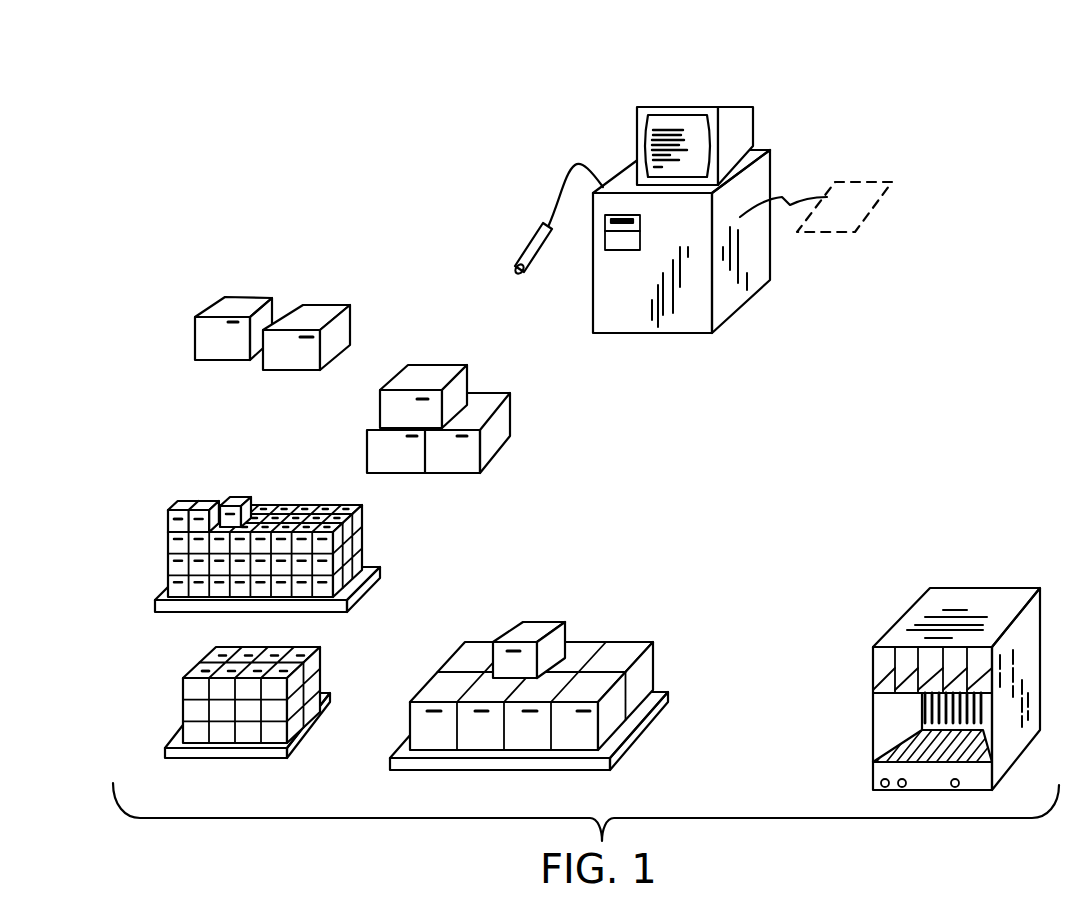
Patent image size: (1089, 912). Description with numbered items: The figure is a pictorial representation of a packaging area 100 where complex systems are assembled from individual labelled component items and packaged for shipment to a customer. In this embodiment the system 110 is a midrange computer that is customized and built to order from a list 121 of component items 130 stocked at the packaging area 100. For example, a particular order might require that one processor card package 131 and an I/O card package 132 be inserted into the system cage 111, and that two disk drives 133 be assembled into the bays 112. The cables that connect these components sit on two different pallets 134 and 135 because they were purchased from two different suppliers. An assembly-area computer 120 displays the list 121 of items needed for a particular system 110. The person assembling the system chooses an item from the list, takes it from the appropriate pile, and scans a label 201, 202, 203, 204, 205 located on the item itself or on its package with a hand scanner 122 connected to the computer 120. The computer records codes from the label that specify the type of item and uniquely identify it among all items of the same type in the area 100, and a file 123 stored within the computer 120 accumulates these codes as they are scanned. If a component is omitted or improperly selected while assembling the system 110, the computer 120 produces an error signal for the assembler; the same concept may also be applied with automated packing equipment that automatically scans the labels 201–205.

The packaging area 100 is at (388, 240).
The system 110 is at (993, 600).
The system cage 111 is at (893, 717).
The bays 112 is at (883, 667).
The assembly-area computer 120 is at (790, 168).
The list 121 is at (665, 130).
The hand scanner 122 is at (545, 234).
The file 123 is at (886, 183).
The component items 130 is at (187, 427).
The processor card package 131 is at (253, 297).
The I/O card package 132 is at (432, 360).
The disk drives 133 is at (533, 622).
The pallet 134 is at (273, 503).
The pallet 135 is at (318, 647).
The label 201 is at (235, 325).
The label 202 is at (463, 438).
The label 203 is at (580, 713).
The label 204 is at (168, 520).
The label 205 is at (210, 666).